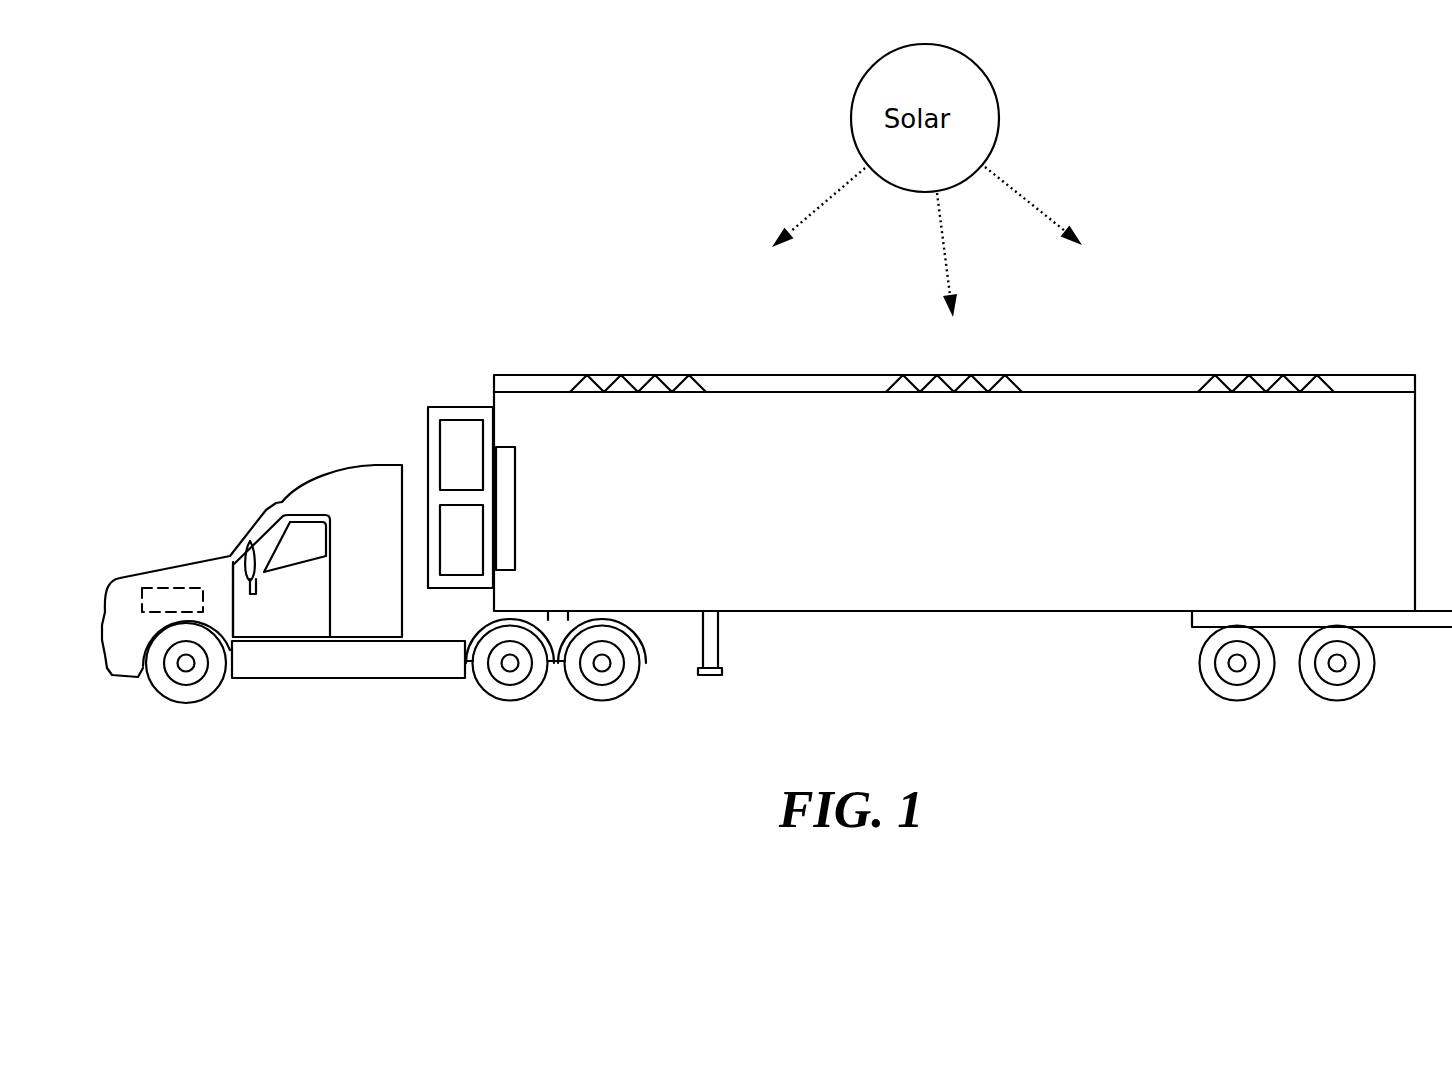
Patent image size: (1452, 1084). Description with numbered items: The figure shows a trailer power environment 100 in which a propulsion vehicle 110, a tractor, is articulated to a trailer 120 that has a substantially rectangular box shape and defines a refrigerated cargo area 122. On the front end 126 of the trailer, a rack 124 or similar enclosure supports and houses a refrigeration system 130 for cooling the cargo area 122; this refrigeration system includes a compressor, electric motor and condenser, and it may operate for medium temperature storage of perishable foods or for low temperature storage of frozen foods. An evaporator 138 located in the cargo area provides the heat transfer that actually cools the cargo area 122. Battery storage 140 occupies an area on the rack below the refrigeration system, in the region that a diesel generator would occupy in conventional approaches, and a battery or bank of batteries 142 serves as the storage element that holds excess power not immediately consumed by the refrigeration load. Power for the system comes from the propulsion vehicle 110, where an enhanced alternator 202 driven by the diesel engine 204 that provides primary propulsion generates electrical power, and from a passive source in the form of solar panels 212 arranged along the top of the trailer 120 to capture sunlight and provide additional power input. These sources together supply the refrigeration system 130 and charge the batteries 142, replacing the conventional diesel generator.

The trailer power environment 100 is at (460, 242).
The propulsion vehicle 110 is at (300, 487).
The trailer 120 is at (1417, 378).
The refrigerated cargo area 122 is at (980, 525).
The rack 124 is at (427, 407).
The front end of the trailer 126 is at (518, 362).
The refrigeration system 130 is at (458, 428).
The evaporator 138 is at (512, 508).
The battery storage 140 is at (422, 568).
The bank of batteries 142 is at (463, 558).
The enhanced alternator 202 is at (188, 598).
The diesel engine 204 is at (112, 580).
The solar panels 212 is at (660, 375).